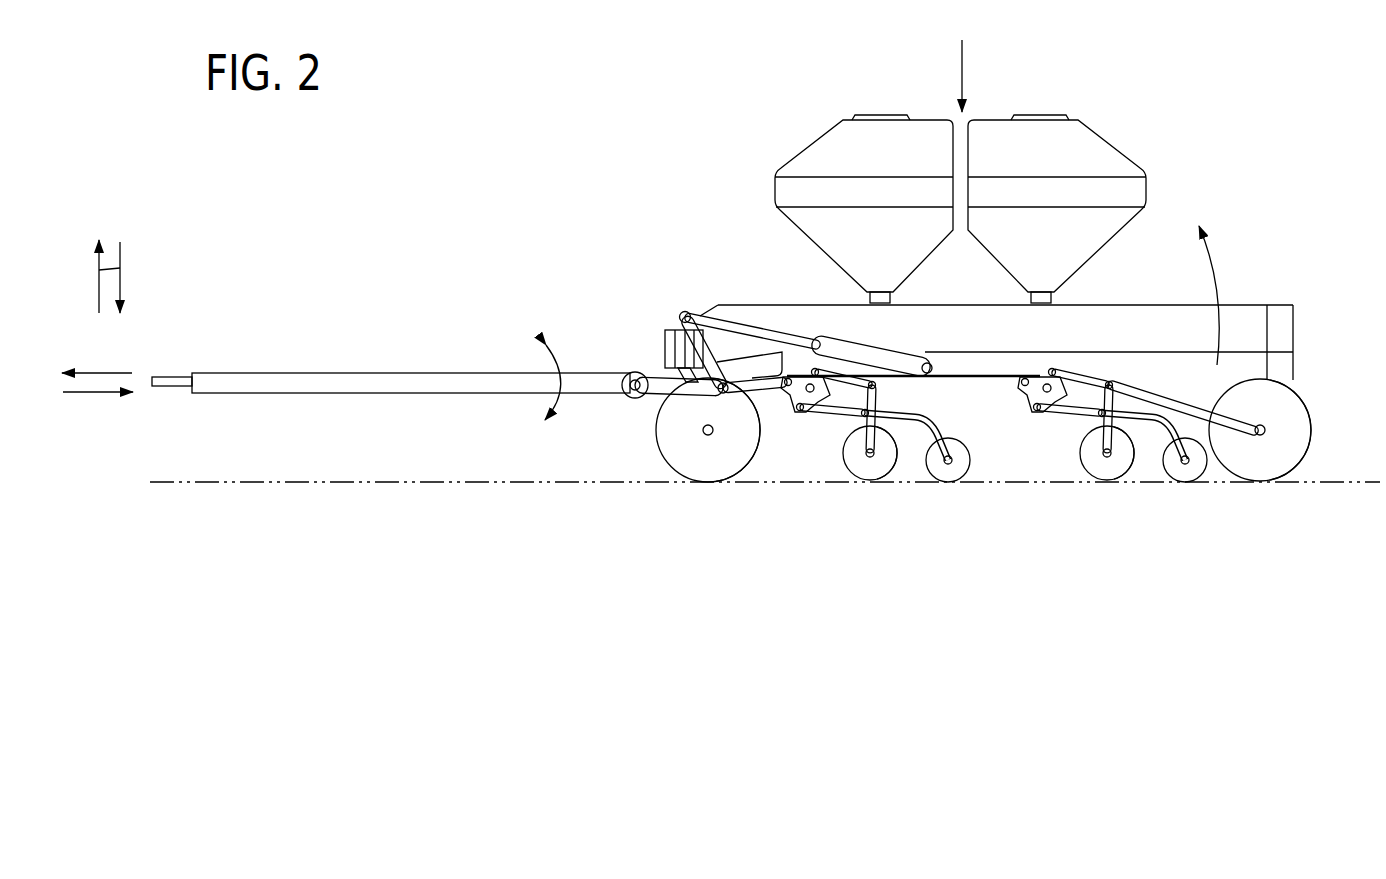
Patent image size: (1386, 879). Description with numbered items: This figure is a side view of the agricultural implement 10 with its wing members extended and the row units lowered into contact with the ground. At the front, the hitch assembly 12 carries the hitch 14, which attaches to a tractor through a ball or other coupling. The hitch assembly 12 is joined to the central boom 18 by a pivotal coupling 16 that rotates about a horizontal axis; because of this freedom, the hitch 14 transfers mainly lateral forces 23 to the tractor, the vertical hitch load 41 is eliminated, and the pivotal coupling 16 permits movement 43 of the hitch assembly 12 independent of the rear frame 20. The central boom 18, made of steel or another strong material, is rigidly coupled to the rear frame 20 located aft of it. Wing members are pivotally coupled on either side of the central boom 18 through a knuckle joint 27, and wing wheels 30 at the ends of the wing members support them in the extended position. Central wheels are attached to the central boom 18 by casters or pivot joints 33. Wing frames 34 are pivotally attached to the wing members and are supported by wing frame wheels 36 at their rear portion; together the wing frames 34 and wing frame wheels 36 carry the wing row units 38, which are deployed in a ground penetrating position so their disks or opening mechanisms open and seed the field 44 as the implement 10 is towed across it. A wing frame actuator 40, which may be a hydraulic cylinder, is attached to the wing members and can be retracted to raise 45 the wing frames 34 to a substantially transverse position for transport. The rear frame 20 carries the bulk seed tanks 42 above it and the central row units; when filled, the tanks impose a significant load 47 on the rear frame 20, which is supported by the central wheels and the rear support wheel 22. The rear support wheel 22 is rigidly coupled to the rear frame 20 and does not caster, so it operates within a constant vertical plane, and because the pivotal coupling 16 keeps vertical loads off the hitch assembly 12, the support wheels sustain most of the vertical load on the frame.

The agricultural implement 10 is at (707, 126).
The hitch assembly 12 is at (362, 372).
The hitch 14 is at (181, 376).
The pivotal coupling 16 is at (665, 375).
The central boom 18 is at (660, 344).
The rear frame 20 is at (820, 305).
The rear support wheel 22 is at (1317, 408).
The lateral forces 23 is at (100, 380).
The knuckle joint 27 is at (670, 316).
The wing wheels 30 is at (657, 440).
The pivot joints 33 is at (663, 365).
The wing frames 34 is at (970, 380).
The wing frame wheels 36 is at (1246, 470).
The wing row units 38 is at (870, 497).
The wing frame actuator 40 is at (755, 325).
The vertical hitch load 41 is at (120, 282).
The bulk seed tanks 42 is at (1090, 147).
The movement 43 is at (572, 408).
The field 44 is at (385, 483).
The raising of wing frames 45 is at (1218, 290).
The load 47 is at (963, 68).